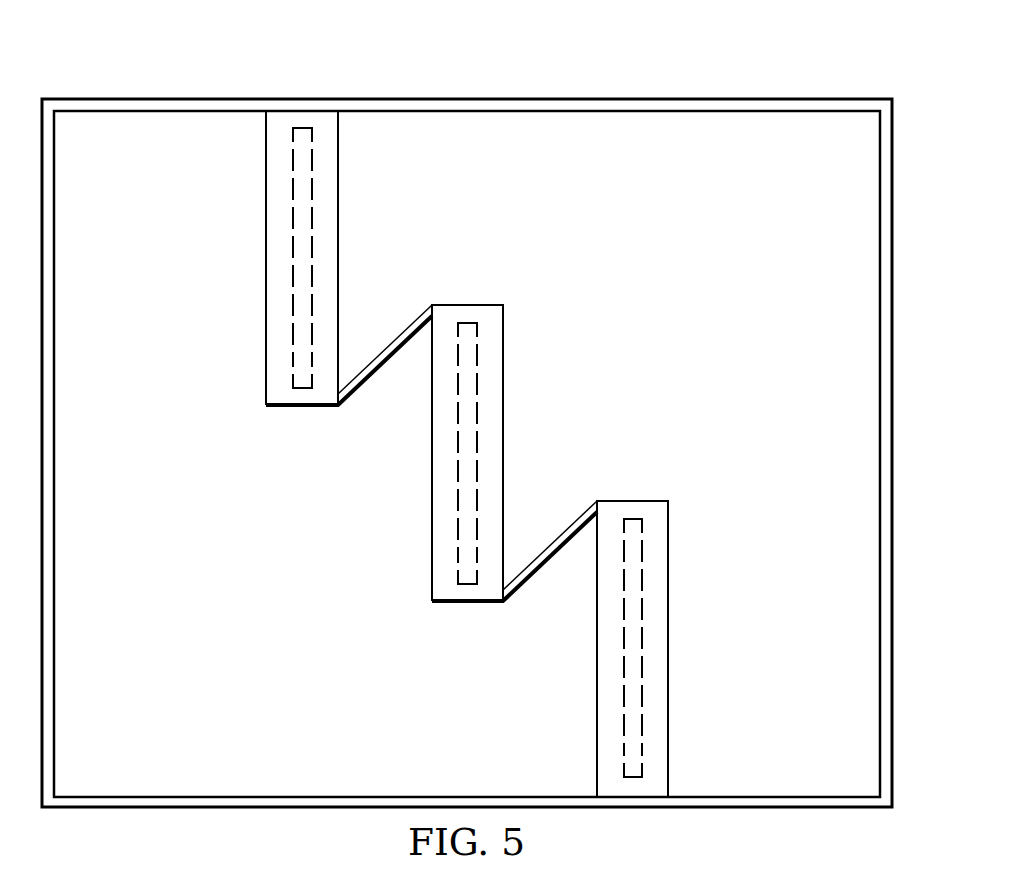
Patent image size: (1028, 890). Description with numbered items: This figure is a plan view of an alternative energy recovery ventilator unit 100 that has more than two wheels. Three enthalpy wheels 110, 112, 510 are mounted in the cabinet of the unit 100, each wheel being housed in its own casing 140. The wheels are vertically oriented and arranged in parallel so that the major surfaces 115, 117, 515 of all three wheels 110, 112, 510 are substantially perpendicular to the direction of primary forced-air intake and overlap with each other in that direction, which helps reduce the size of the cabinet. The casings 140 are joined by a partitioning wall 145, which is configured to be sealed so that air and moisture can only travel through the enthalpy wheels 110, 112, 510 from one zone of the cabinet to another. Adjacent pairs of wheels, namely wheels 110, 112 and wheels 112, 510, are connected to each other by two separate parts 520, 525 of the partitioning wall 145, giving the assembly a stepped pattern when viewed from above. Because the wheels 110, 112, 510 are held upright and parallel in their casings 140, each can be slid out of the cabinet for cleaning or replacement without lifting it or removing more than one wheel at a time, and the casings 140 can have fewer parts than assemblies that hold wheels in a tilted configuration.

The energy recovery ventilator unit 100 is at (961, 74).
The enthalpy wheel 110 is at (300, 400).
The enthalpy wheel 112 is at (469, 312).
The major surface 115 is at (292, 188).
The major surface 117 is at (478, 383).
The casing 140 is at (278, 375).
The partitioning wall 145 is at (394, 253).
The enthalpy wheel 510 is at (636, 508).
The major surface 515 is at (643, 577).
The part of the partitioning wall 520 is at (390, 363).
The part of the partitioning wall 525 is at (552, 562).